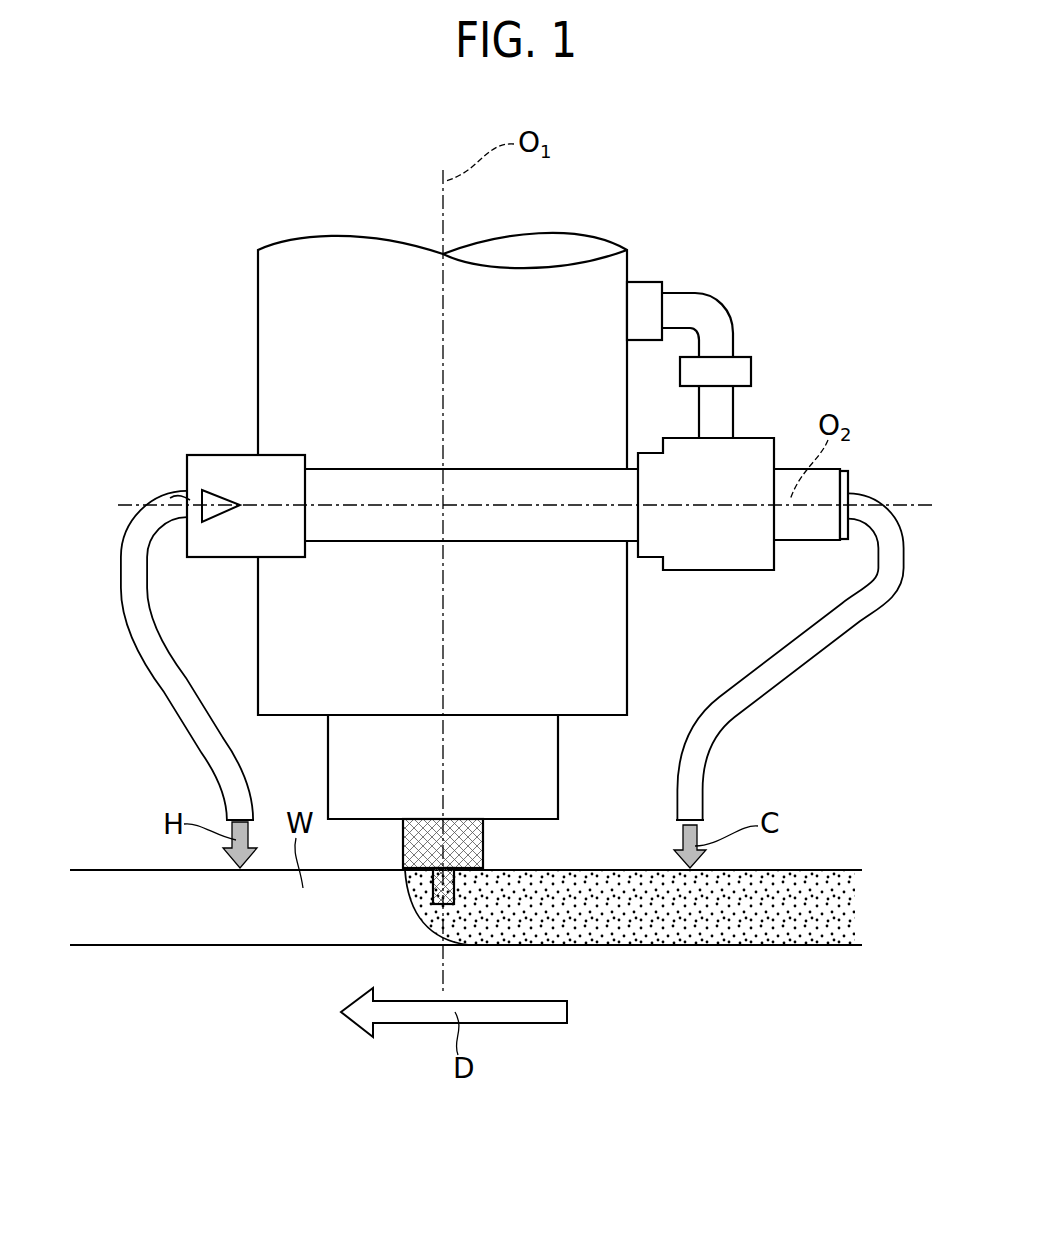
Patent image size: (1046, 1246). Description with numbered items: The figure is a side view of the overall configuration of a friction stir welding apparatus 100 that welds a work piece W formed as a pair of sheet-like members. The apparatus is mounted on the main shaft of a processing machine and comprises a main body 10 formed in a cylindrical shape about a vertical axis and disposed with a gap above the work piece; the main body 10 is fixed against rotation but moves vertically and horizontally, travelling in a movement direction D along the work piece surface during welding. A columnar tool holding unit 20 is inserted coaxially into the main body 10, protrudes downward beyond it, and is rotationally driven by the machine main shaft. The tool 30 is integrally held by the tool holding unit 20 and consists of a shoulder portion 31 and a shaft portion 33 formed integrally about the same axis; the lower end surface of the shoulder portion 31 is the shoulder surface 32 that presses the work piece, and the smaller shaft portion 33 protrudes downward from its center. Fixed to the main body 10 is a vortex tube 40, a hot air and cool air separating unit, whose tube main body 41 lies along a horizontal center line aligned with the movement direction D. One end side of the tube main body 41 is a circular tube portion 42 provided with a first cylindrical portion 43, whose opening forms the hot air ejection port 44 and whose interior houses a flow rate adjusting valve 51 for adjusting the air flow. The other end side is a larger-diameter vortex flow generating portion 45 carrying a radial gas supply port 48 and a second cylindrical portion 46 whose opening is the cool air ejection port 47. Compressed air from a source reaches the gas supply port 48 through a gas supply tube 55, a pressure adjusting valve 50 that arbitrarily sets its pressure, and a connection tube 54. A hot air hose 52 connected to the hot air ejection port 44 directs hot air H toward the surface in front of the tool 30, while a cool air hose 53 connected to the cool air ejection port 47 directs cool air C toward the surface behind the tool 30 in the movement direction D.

The friction stir welding apparatus 100 is at (797, 177).
The main body 10 is at (287, 333).
The tool holding unit 20 is at (528, 755).
The tool 30 is at (527, 860).
The shoulder portion 31 is at (470, 840).
The shoulder surface 32 is at (468, 885).
The shaft portion 33 is at (430, 905).
The vortex tube 40 is at (798, 366).
The tube main body 41 is at (512, 468).
The tube portion 42 is at (400, 530).
The first cylindrical portion 43 is at (210, 548).
The hot air ejection port 44 is at (182, 496).
The vortex flow generating portion 45 is at (716, 548).
The second cylindrical portion 46 is at (810, 530).
The cool air ejection port 47 is at (850, 497).
The gas supply port 48 is at (712, 437).
The pressure adjusting valve 50 is at (742, 372).
The flow rate adjusting valve 51 is at (215, 500).
The hot air hose 52 is at (140, 600).
The cool air hose 53 is at (862, 615).
The connection tube 54 is at (723, 412).
The gas supply tube 55 is at (705, 300).